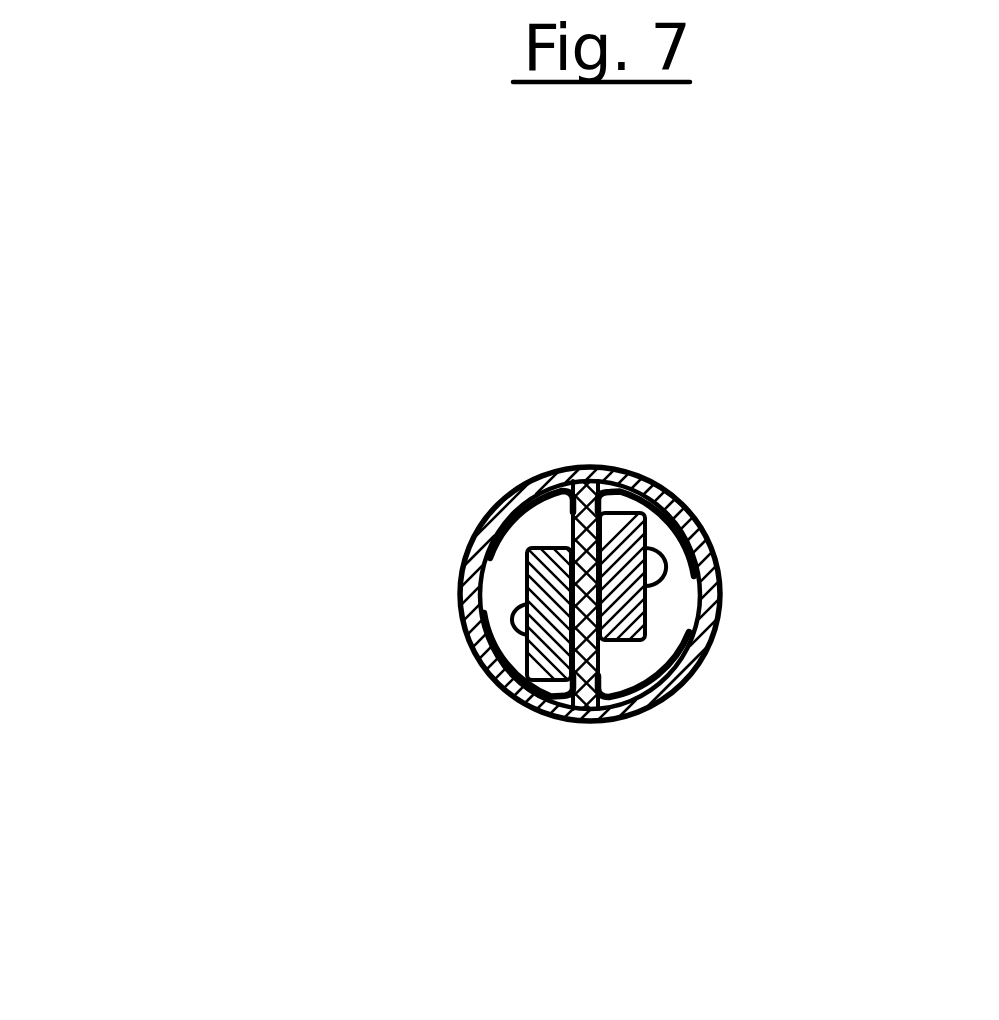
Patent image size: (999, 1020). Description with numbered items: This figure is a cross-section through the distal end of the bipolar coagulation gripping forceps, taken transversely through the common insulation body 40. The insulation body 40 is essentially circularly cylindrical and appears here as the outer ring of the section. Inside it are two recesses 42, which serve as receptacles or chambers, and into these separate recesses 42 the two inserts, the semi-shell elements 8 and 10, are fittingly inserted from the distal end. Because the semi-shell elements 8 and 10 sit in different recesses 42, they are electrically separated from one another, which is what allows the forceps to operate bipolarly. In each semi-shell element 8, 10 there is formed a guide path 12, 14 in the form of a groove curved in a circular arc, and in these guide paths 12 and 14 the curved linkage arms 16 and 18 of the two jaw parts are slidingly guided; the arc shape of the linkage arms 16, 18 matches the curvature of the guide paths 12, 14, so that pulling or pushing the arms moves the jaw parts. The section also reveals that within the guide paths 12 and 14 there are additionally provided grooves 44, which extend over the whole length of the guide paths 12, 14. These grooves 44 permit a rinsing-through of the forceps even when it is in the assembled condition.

The semi-shell element 8 is at (638, 685).
The semi-shell element 10 is at (515, 520).
The guide path 12 is at (652, 611).
The guide path 14 is at (524, 556).
The linkage arm 16 is at (678, 526).
The linkage arm 18 is at (517, 650).
The insulation body 40 is at (605, 505).
The recess 42 is at (507, 625).
The groove 44 is at (705, 577).